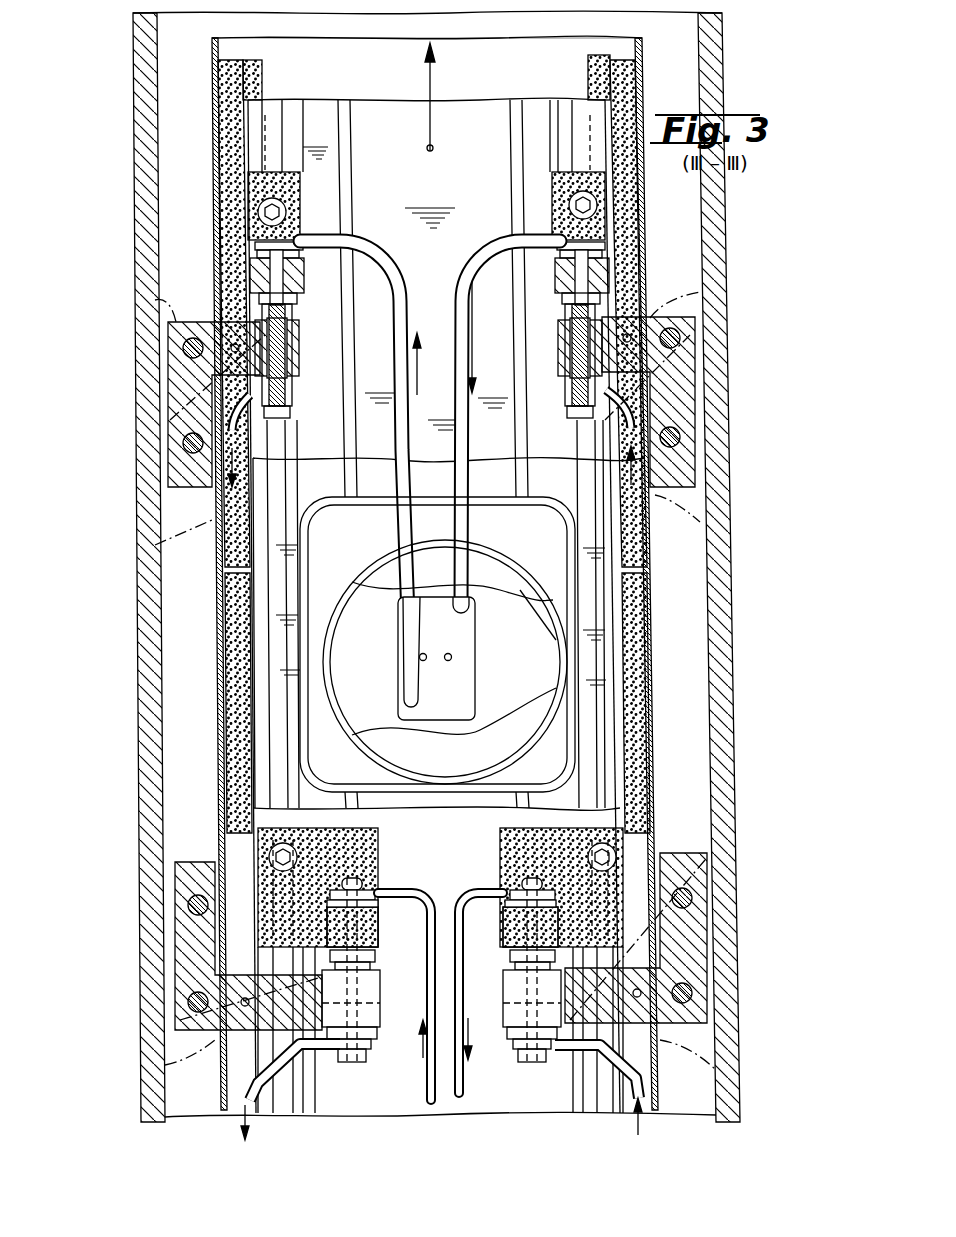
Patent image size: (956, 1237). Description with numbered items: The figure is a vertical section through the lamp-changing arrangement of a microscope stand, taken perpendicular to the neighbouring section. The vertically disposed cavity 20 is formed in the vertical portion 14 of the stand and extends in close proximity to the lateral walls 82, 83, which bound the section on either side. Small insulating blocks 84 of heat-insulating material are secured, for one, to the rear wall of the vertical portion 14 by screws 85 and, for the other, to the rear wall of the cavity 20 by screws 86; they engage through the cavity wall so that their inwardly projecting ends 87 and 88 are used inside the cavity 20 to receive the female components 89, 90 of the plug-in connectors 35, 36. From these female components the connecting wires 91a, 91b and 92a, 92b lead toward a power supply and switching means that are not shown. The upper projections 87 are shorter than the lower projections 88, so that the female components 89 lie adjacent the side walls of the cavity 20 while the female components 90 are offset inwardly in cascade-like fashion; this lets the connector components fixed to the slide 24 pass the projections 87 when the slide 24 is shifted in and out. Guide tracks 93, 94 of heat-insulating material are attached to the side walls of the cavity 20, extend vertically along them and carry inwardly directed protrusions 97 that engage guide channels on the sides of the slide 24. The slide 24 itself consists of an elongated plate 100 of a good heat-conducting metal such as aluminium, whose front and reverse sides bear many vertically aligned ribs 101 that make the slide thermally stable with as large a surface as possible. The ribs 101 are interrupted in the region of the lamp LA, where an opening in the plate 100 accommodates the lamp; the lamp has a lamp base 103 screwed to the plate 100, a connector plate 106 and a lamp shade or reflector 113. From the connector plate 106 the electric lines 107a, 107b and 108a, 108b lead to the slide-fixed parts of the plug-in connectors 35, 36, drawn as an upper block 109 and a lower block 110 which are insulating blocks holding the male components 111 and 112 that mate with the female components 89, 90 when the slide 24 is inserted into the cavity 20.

The vertical portion of the microscope stand 14 is at (131, 303).
The cavity 20 is at (648, 42).
The slide 24 is at (482, 96).
The plug-in connector 35 is at (702, 364).
The plug-in connector 36 is at (715, 911).
The lateral wall 82 is at (728, 655).
The lateral wall 83 is at (153, 580).
The insulating block 84 is at (192, 370).
The screw 85 is at (196, 337).
The screw 86 is at (236, 344).
The inwardly projecting end 87 is at (298, 360).
The inwardly projecting end 88 is at (380, 979).
The female component 89 is at (310, 318).
The female component 90 is at (378, 958).
The connecting wire 91a is at (236, 416).
The connecting wire 91b is at (620, 425).
The connecting wire 92a is at (246, 1088).
The connecting wire 92b is at (642, 1085).
The guide track 93 is at (230, 68).
The guide track 94 is at (632, 72).
The protrusion 97 is at (264, 80).
The plate 100 is at (456, 270).
The rib 101 is at (340, 162).
The lamp base 103 is at (392, 664).
The connector plate 106 is at (460, 695).
The electric line 107a is at (410, 522).
The electric line 107b is at (468, 528).
The electric line 108a is at (427, 1066).
The electric line 108b is at (454, 1086).
The upper clamping block 109 is at (300, 213).
The lower clamping block 110 is at (378, 860).
The male component 111 is at (308, 342).
The male component 112 is at (380, 1004).
The lamp shade or reflector 113 is at (462, 765).
The lamp LA is at (528, 650).